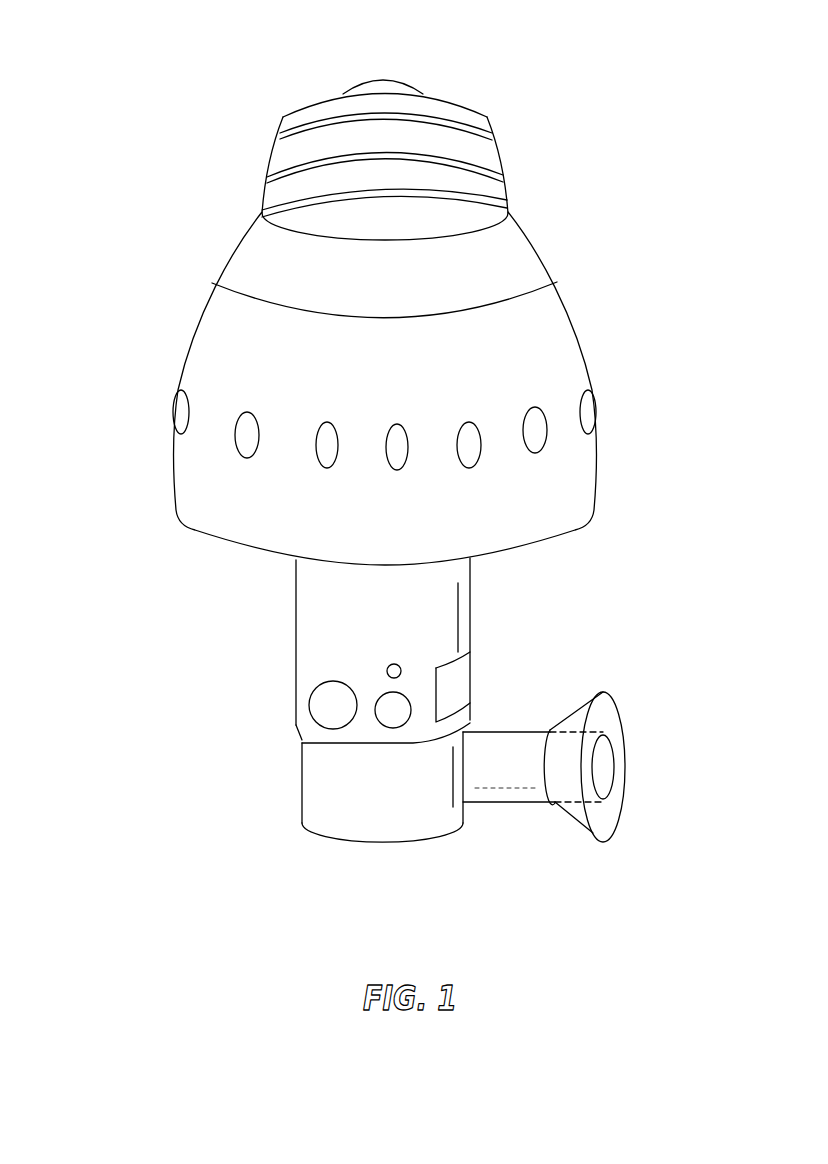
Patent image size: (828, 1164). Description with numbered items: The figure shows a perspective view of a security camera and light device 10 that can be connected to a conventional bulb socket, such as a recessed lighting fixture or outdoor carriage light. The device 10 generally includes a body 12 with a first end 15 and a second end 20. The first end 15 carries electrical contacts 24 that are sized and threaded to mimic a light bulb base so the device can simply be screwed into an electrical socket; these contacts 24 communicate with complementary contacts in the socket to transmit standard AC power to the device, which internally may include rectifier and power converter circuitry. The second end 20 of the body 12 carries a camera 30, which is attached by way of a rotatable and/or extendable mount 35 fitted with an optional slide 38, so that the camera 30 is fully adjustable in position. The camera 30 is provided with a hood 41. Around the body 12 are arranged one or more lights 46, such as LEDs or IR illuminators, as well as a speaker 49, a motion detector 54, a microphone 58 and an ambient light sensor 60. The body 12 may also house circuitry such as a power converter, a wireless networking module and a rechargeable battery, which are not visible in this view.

The security camera and light device 10 is at (222, 98).
The first end 15 is at (258, 155).
The electrical contacts 24 is at (395, 82).
The body 12 is at (158, 492).
The lights 46 is at (246, 431).
The second end 20 is at (263, 825).
The ambient light sensor 60 is at (386, 670).
The speaker 49 is at (325, 707).
The microphone 58 is at (390, 716).
The motion detector 54 is at (460, 685).
The rotatable and/or extendable mount 35 is at (347, 815).
The slide 38 is at (517, 782).
The hood 41 is at (608, 695).
The camera 30 is at (607, 767).